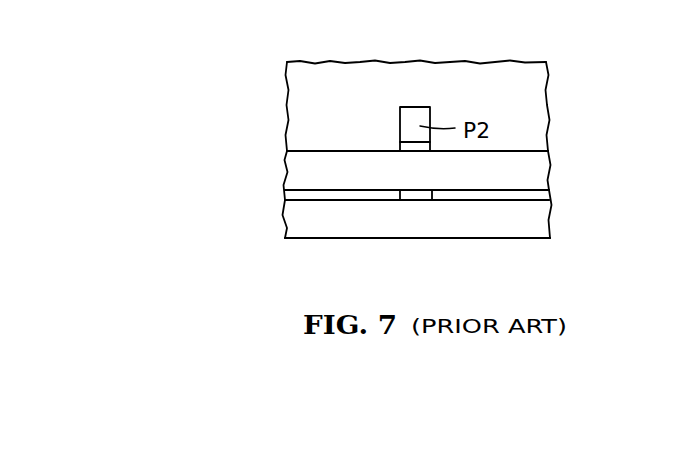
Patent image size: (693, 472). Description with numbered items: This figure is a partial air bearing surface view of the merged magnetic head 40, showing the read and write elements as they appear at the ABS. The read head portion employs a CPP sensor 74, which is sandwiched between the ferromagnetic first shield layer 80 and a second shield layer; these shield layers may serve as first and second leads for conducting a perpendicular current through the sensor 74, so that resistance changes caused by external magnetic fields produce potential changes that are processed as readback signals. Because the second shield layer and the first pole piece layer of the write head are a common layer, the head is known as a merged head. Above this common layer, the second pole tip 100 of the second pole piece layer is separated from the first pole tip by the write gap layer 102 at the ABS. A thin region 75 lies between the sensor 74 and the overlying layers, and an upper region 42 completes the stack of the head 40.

The merged magnetic head 40 is at (574, 69).
The upper dielectric layer 42 is at (292, 83).
The first shield layer 80 is at (534, 218).
The thin interlayer 75 is at (320, 200).
The CPP sensor 74 is at (417, 200).
The second pole tip 100 is at (418, 110).
The write gap layer 102 is at (416, 148).